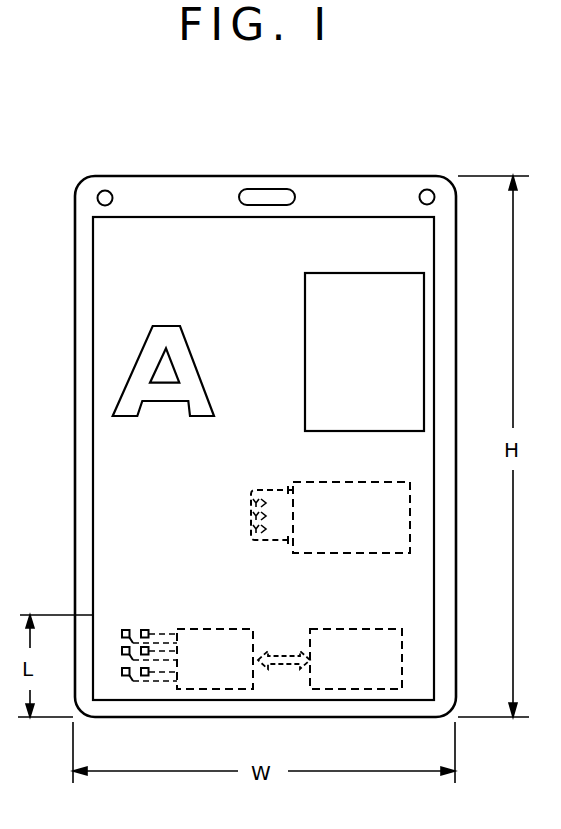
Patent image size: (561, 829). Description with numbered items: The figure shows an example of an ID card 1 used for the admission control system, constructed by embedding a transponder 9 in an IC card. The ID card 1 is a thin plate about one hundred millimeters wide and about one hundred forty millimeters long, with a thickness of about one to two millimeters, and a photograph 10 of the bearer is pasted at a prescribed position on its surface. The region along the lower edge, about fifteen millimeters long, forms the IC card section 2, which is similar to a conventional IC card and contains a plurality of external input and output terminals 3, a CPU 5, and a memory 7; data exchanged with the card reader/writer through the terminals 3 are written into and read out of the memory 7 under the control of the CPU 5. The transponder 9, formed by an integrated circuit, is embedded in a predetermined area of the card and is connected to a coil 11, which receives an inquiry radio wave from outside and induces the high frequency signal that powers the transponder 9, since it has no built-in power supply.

The ID card 1 is at (75, 283).
The IC card section 2 is at (407, 700).
The external input and output terminals 3 is at (128, 678).
The CPU 5 is at (197, 689).
The memory 7 is at (347, 689).
The transponder 9 is at (410, 508).
The photograph 10 is at (420, 292).
The coil 11 is at (275, 490).